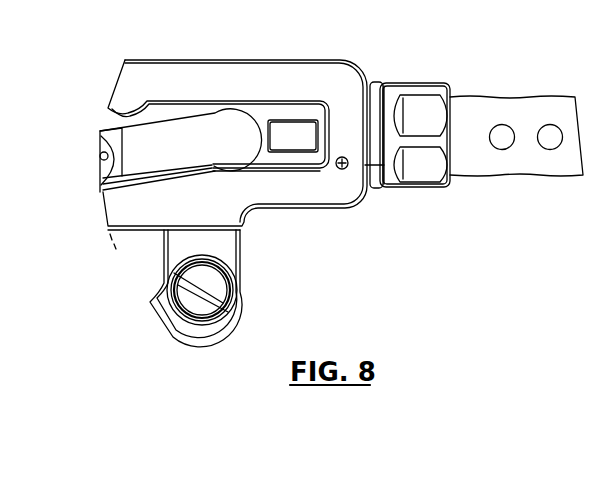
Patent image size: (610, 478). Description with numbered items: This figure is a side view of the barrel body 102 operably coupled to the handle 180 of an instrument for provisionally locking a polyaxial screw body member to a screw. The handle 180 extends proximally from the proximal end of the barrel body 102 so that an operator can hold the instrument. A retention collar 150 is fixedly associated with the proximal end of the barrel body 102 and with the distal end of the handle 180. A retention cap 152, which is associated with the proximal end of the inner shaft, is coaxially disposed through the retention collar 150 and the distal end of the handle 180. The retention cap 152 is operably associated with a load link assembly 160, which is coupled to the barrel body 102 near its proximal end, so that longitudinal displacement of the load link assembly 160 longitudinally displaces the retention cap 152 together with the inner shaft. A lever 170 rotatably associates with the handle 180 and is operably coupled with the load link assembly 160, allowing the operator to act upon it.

The barrel body 102 is at (472, 105).
The retention collar 150 is at (415, 172).
The retention cap 152 is at (290, 143).
The load link assembly 160 is at (207, 132).
The lever 170 is at (173, 320).
The handle 180 is at (287, 70).